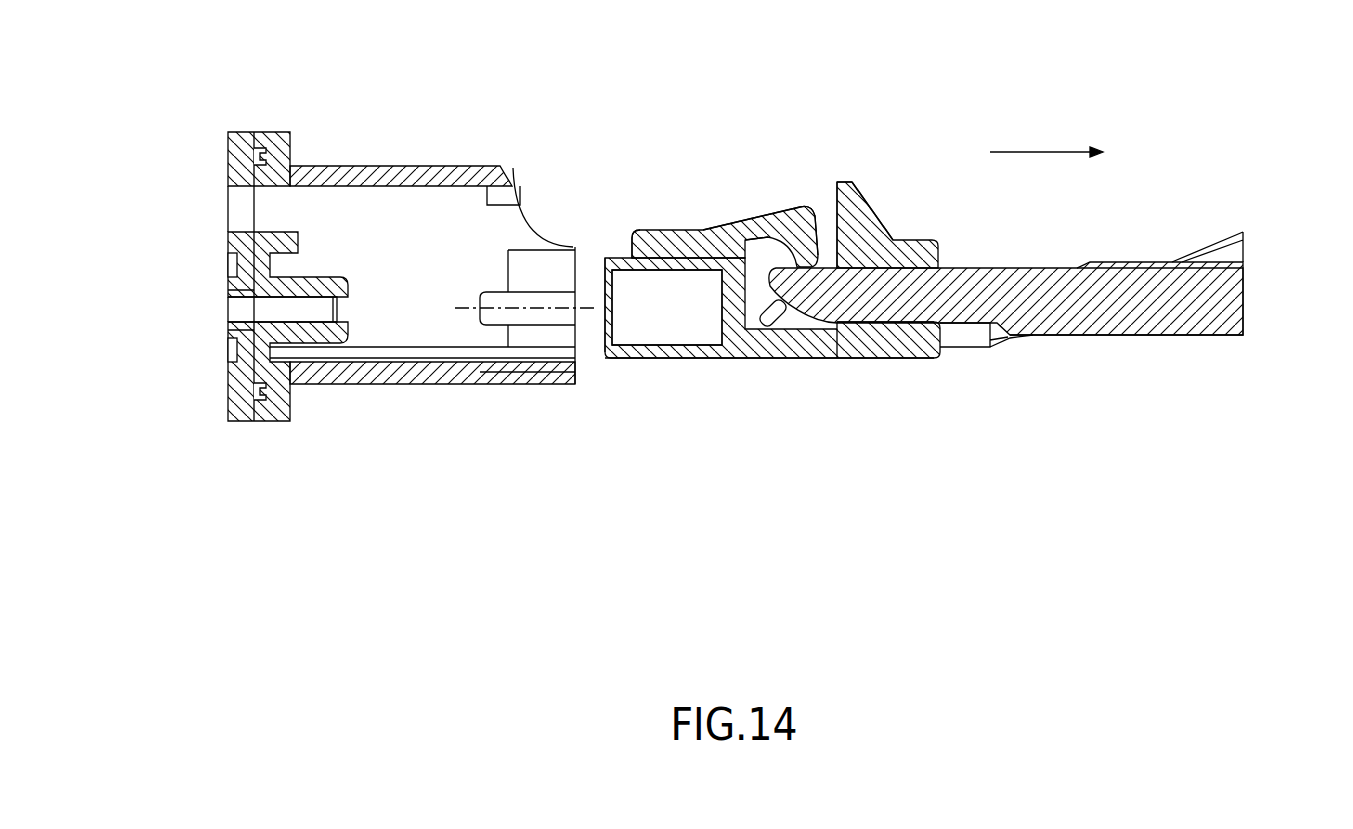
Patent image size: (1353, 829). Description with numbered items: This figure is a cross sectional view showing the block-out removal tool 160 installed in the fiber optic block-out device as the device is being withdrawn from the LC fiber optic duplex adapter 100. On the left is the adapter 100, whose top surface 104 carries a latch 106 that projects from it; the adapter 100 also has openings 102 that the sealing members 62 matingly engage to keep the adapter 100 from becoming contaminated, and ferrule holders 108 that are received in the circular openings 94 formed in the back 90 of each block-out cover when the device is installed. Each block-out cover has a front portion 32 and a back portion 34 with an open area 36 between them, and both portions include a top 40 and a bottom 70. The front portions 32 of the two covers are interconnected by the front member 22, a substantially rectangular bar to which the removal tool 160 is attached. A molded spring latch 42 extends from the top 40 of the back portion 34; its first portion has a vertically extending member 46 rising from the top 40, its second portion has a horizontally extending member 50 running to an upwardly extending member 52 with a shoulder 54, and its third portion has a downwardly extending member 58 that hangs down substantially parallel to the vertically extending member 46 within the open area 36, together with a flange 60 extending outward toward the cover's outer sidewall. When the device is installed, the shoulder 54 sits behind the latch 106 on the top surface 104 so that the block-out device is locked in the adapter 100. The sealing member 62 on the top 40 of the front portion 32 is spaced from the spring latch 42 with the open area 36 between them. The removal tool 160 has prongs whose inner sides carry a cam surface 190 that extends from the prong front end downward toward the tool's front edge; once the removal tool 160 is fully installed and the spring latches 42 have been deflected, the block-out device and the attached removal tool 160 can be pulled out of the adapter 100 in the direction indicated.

The LC fiber optic duplex adapter 100 is at (337, 128).
The top surface 104 is at (360, 167).
The latch 106 is at (500, 193).
The openings 102 is at (557, 272).
The ferrule holders 108 is at (257, 308).
The back 90 is at (600, 340).
The circular opening 94 is at (636, 320).
The back portion 34 is at (693, 360).
The top 40 is at (605, 256).
The bottom 70 is at (900, 360).
The horizontally extending member 50 is at (668, 228).
The vertically extending member 46 is at (627, 230).
The molded spring latch 42 is at (728, 232).
The upwardly extending member 52 is at (740, 228).
The shoulder 54 is at (813, 228).
The front portion 32 is at (850, 217).
The open area 36 is at (823, 210).
The downwardly extending member 58 is at (835, 228).
The sealing member 62 is at (882, 232).
The front member 22 is at (940, 250).
The flange 60 is at (787, 322).
The cam surface 190 is at (998, 335).
The removal tool 160 is at (1230, 214).